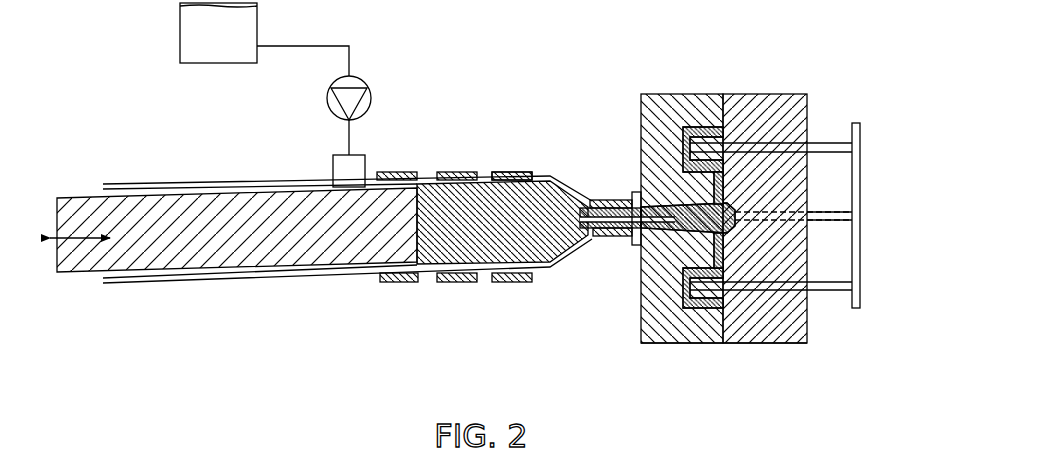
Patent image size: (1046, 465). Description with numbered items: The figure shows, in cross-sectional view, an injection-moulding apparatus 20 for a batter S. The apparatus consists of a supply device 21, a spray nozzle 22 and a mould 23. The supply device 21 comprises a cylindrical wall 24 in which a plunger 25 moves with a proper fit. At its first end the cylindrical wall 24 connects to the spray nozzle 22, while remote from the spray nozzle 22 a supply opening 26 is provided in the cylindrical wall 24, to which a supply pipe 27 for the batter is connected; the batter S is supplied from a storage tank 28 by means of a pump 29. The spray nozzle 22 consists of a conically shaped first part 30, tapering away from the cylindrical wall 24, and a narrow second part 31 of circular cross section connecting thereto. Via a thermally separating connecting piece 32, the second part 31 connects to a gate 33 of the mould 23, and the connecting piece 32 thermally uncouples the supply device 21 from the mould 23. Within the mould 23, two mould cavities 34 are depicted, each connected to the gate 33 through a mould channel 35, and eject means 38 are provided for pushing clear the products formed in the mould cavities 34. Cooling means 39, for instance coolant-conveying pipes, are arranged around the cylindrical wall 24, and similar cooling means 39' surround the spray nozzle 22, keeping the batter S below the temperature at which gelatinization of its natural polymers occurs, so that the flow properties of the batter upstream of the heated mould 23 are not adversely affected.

The injection-moulding apparatus 20 is at (241, 333).
The supply device 21 is at (189, 296).
The spray nozzle 22 is at (601, 190).
The mould 23 is at (688, 88).
The cylindrical wall 24 is at (482, 286).
The plunger 25 is at (208, 217).
The supply opening 26 is at (347, 173).
The supply pipe 27 is at (345, 137).
The storage tank 28 is at (232, 47).
The pump 29 is at (330, 100).
The first part 30 is at (569, 263).
The second part 31 is at (610, 262).
The thermally separating connecting piece 32 is at (635, 247).
The gate 33 is at (638, 163).
The mould cavity 34 is at (698, 350).
The mould channel 35 is at (739, 132).
The eject means 38 is at (840, 296).
The cooling means 39 is at (454, 231).
The cooling means 39' is at (587, 312).
The batter S is at (524, 168).